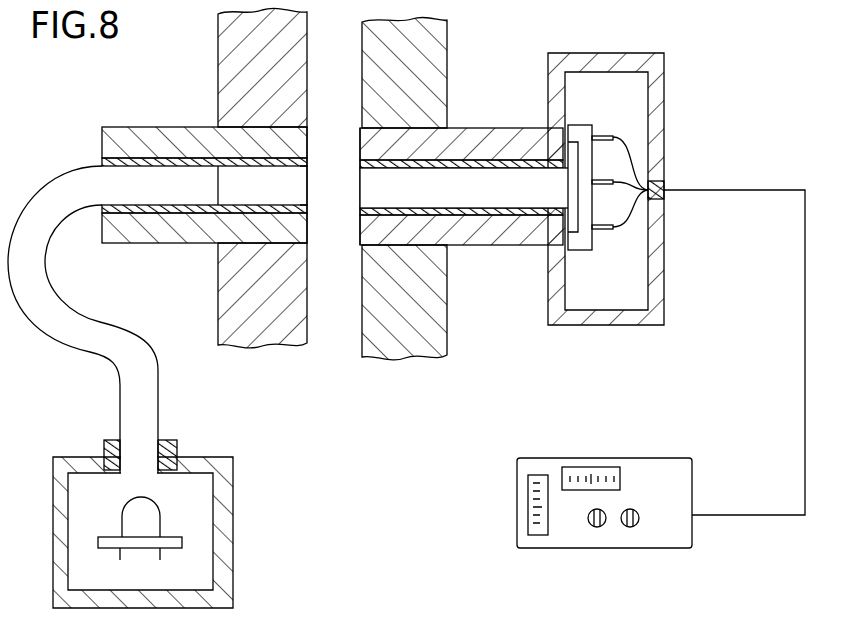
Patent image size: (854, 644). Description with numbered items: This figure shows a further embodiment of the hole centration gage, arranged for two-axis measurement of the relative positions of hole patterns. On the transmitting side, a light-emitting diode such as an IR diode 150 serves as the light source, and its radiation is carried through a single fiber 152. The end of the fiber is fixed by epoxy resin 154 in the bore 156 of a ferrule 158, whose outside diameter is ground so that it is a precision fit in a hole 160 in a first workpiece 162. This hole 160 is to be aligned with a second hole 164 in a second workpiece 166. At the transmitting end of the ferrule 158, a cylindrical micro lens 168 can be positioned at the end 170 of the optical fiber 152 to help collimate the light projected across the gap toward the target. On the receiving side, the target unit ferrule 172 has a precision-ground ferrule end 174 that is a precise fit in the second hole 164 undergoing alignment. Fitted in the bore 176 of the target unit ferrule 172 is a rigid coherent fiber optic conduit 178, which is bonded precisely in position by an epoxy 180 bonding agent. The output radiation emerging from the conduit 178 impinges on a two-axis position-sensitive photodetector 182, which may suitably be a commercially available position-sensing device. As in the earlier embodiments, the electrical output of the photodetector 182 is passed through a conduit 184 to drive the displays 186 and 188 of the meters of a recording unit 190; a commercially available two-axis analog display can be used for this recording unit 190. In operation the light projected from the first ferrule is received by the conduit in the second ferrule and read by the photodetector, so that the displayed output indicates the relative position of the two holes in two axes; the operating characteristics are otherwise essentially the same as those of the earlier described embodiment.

The IR diode 150 is at (125, 500).
The single fiber 152 is at (160, 390).
The epoxy resin 154 is at (102, 162).
The bore 156 is at (98, 210).
The ferrule 158 is at (115, 127).
The hole 160 is at (217, 127).
The first workpiece 162 is at (218, 283).
The second hole 164 is at (450, 247).
The second workpiece 166 is at (448, 318).
The cylindrical micro lens 168 is at (299, 182).
The end 170 is at (222, 197).
The target unit ferrule 172 is at (653, 53).
The ferrule end 174 is at (477, 127).
The bore 176 is at (360, 213).
The rigid coherent fiber optic conduit 178 is at (484, 199).
The epoxy bonding agent 180 is at (360, 165).
The 2-axis position-sensitive photodetector 182 is at (583, 250).
The conduit 184 is at (805, 328).
The display 186 is at (548, 519).
The display 188 is at (620, 478).
The recording unit 190 is at (652, 548).